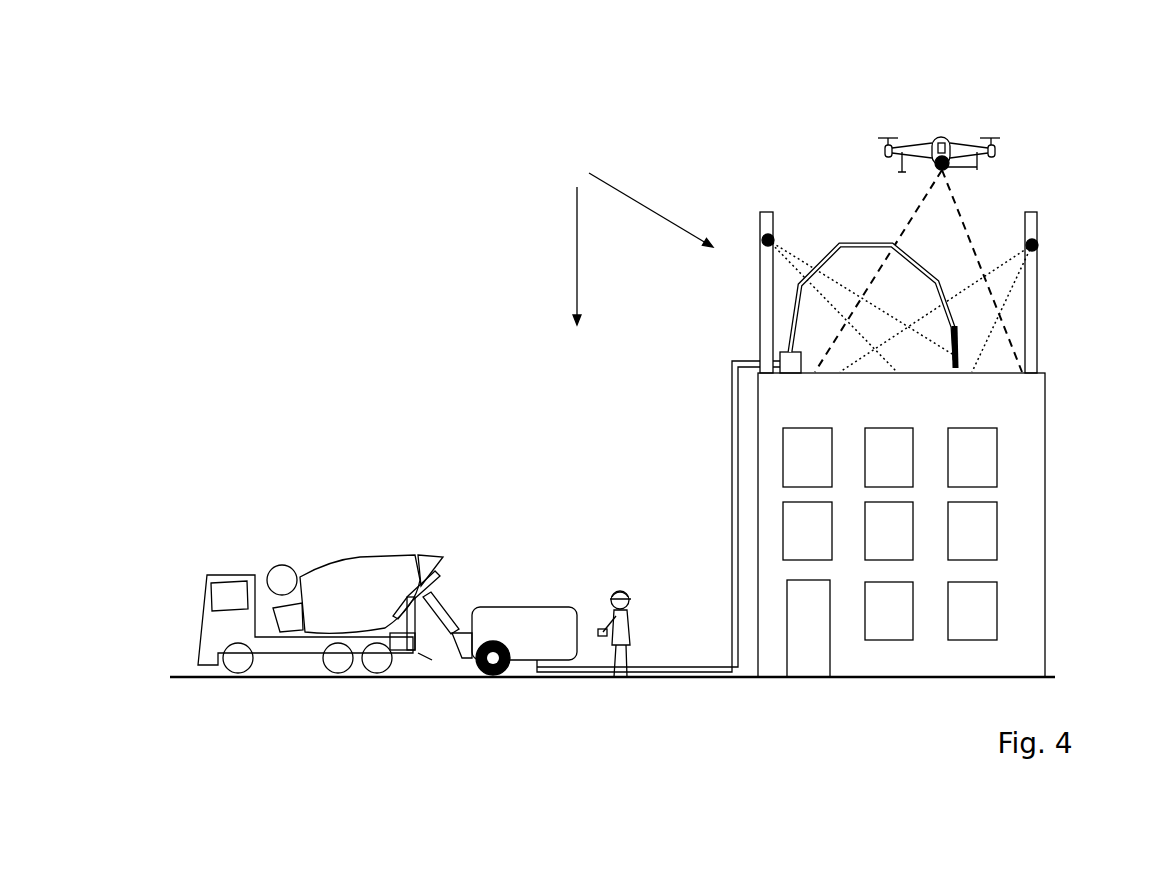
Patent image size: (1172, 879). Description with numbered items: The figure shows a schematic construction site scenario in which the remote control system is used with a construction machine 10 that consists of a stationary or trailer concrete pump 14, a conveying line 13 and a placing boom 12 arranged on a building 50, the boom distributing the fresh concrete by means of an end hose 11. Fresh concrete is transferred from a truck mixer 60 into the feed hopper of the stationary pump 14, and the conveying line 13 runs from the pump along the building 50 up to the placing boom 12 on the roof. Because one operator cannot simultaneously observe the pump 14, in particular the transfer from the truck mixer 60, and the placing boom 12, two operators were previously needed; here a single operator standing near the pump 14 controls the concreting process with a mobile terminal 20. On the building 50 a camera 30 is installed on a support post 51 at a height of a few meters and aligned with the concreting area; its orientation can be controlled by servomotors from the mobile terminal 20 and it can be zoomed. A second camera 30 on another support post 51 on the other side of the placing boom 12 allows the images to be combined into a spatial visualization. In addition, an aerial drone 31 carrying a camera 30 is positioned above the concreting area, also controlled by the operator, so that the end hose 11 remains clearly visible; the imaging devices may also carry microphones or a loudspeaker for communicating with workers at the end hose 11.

The construction machine 10 is at (632, 236).
The end hose 11 is at (942, 352).
The placing boom 12 is at (843, 240).
The conveying line 13 is at (733, 418).
The stationary pump 14 is at (543, 607).
The mobile terminal 20 is at (603, 630).
The camera 30 is at (760, 236).
The aerial drone 31 is at (950, 137).
The building 50 is at (1045, 508).
The support post 51 is at (762, 282).
The truck mixer 60 is at (362, 555).